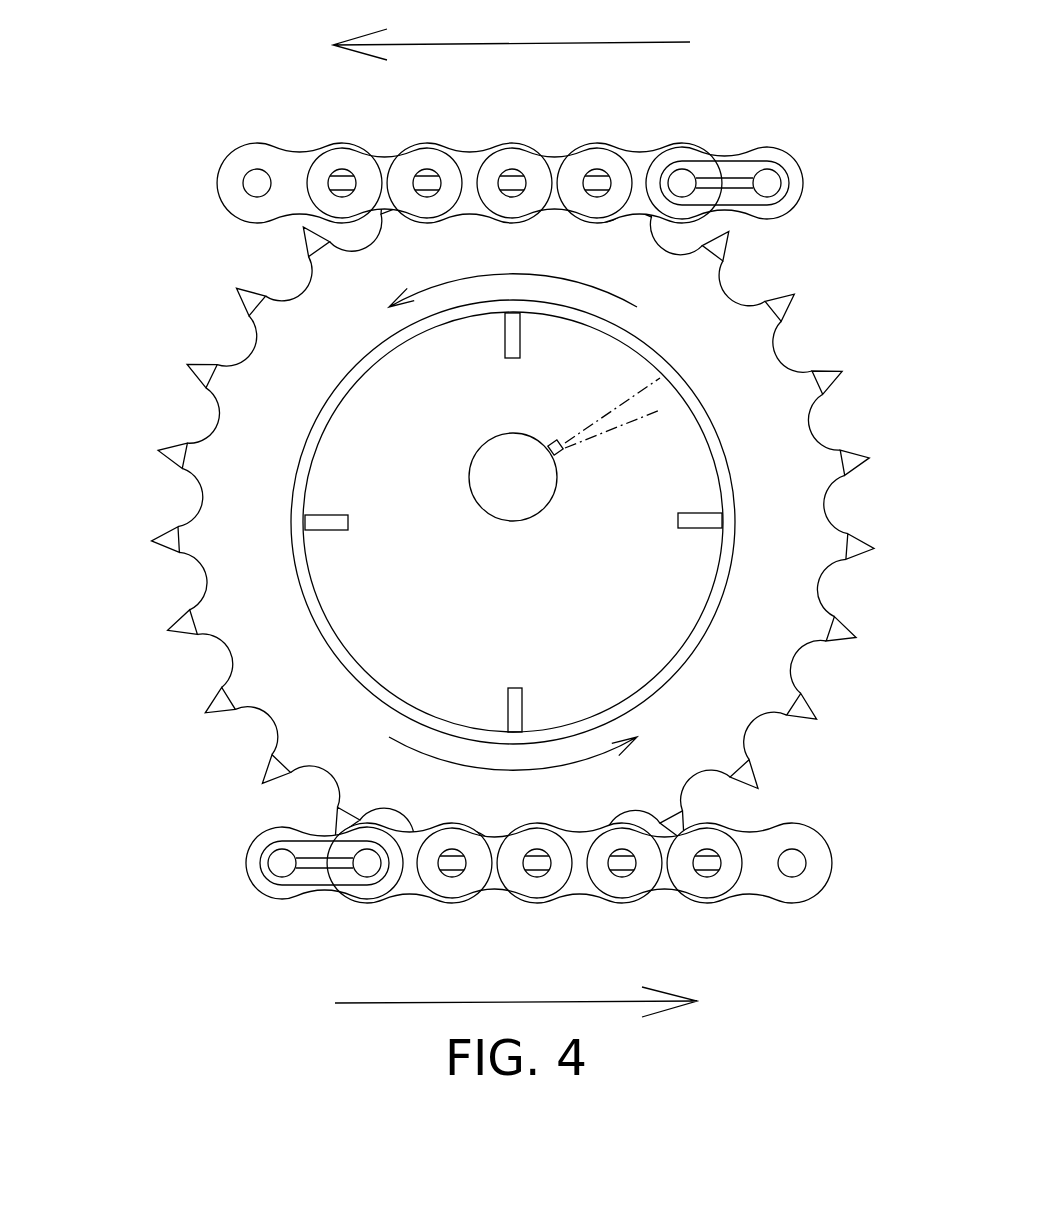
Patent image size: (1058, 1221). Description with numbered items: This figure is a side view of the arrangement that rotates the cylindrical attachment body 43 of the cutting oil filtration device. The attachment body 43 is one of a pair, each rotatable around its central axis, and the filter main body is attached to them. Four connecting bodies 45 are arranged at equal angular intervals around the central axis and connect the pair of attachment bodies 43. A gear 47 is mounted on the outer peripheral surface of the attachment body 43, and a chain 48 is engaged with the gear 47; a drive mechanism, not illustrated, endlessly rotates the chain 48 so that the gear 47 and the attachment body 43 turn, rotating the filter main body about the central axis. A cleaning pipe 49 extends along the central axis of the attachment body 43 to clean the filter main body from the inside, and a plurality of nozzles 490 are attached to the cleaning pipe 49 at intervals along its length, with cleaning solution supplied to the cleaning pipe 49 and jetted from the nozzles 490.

The attachment body 43 is at (298, 574).
The connecting body 45 is at (516, 338).
The gear 47 is at (778, 375).
The chain 48 is at (640, 162).
The cleaning pipe 49 is at (480, 447).
The nozzle 490 is at (568, 455).